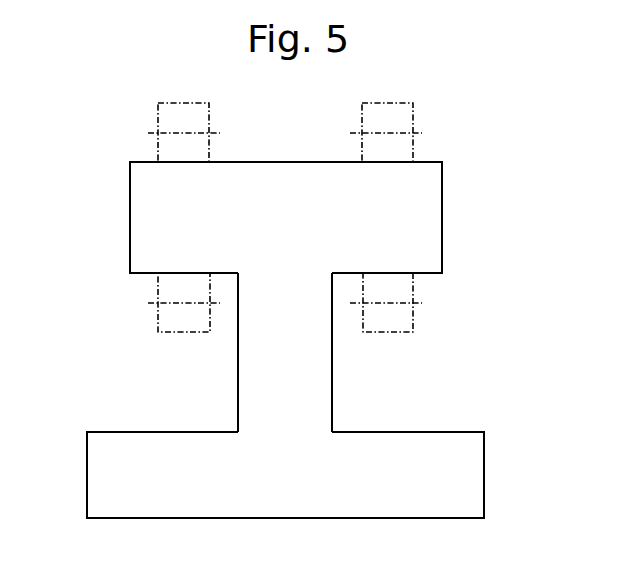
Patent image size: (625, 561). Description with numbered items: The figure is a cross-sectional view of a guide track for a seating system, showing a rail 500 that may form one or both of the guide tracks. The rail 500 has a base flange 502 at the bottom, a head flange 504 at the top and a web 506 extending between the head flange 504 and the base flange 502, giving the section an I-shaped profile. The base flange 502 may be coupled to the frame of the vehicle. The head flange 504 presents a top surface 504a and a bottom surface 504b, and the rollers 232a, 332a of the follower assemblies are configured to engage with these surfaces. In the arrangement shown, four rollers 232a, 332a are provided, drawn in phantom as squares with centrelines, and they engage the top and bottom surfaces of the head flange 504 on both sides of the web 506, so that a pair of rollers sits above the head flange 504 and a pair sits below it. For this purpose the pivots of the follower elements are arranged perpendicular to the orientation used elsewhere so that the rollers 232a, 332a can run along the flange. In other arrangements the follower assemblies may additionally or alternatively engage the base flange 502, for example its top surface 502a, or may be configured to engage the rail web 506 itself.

The rail 500 is at (299, 306).
The base flange 502 is at (321, 443).
The top surface of the base flange 502a is at (454, 431).
The head flange 504 is at (298, 213).
The top surface of the head flange 504a is at (292, 161).
The bottom surface of the head flange 504b is at (143, 276).
The web 506 is at (258, 384).
The rollers 232a is at (413, 115).
The rollers 332a is at (413, 115).